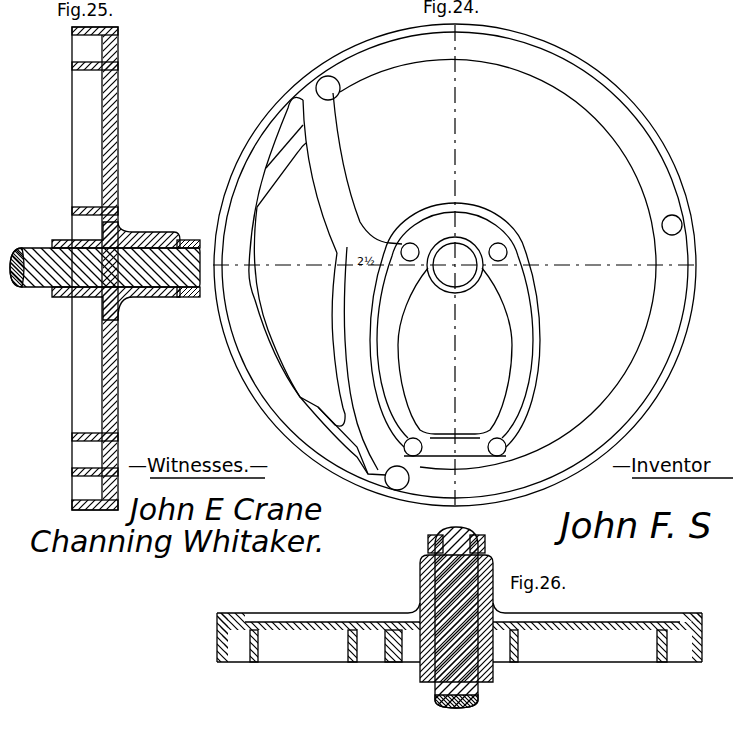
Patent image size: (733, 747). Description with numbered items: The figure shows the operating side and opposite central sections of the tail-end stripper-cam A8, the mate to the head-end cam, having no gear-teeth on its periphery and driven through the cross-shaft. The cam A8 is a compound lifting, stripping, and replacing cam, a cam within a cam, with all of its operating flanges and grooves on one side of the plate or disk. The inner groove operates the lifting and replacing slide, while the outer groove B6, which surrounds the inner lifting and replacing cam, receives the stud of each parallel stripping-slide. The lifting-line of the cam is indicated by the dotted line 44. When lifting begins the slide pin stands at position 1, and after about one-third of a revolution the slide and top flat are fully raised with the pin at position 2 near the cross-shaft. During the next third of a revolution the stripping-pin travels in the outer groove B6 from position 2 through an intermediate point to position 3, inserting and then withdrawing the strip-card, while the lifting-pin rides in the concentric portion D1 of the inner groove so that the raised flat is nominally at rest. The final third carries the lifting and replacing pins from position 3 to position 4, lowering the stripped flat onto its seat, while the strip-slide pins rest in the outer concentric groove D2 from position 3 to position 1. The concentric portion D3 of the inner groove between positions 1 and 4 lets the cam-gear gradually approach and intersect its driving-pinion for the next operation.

In FIG. 24, the compound lifting, stripping, and replacing cam A8 is at (548, 196).
In FIG. 25, the compound lifting, stripping, and replacing cam A8 is at (75, 170).
In FIG. 26, the compound lifting, stripping, and replacing cam A8 is at (563, 652).
In FIG. 24, the outer groove B6 is at (328, 283).
In FIG. 24, the concentric portion of the inner cam-groove D1 is at (455, 325).
In FIG. 24, the outer concentric groove D2 is at (452, 267).
In FIG. 24, the concentric portion of the inner cam-groove D3 is at (455, 450).
In FIG. 24, the lifting-line 44 is at (455, 239).
In FIG. 24, the position one 1 is at (543, 335).
In FIG. 24, the position two 2 is at (367, 168).
In FIG. 24, the position three 3 is at (446, 366).
In FIG. 24, the position four 4 is at (497, 447).